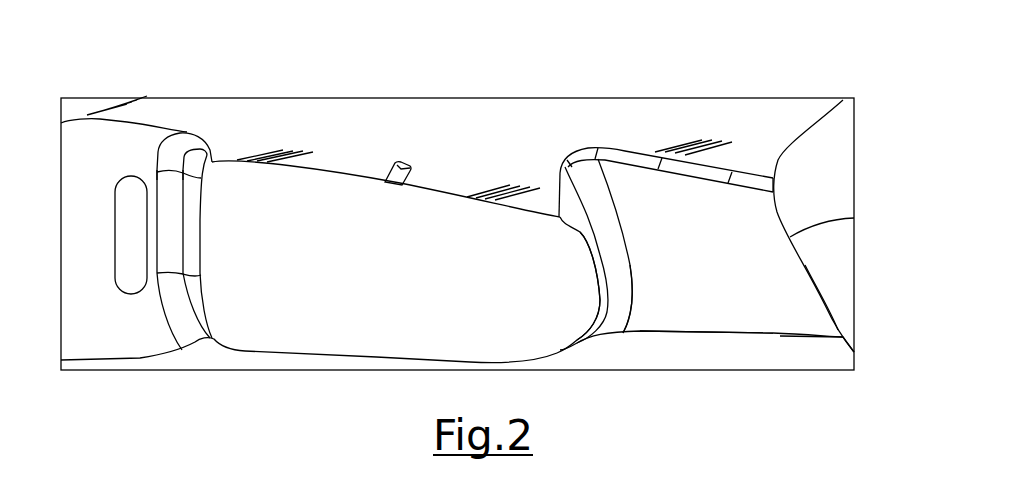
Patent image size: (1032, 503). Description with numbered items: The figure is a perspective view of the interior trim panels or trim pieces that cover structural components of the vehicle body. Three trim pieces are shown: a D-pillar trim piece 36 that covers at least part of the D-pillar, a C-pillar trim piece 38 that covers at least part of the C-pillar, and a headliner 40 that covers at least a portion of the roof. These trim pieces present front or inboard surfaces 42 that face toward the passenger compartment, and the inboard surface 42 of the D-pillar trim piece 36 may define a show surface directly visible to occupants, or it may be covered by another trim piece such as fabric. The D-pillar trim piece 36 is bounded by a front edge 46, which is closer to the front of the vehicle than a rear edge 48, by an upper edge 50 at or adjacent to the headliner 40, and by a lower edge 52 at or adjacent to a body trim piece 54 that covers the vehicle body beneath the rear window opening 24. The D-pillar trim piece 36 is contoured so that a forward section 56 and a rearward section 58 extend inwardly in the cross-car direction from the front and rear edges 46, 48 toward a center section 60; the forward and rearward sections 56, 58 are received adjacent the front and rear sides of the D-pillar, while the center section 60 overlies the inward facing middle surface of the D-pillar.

The rear window opening 24 is at (322, 320).
The D-pillar trim piece 36 is at (717, 205).
The C-pillar trim piece 38 is at (109, 138).
The headliner 40 is at (369, 112).
The inboard surface 42 is at (653, 288).
The front edge 46 is at (588, 250).
The rear edge 48 is at (790, 237).
The upper edge 50 is at (633, 168).
The lower edge 52 is at (728, 333).
The body trim piece 54 is at (817, 353).
The forward section 56 is at (600, 298).
The rearward section 58 is at (832, 289).
The center section 60 is at (702, 312).